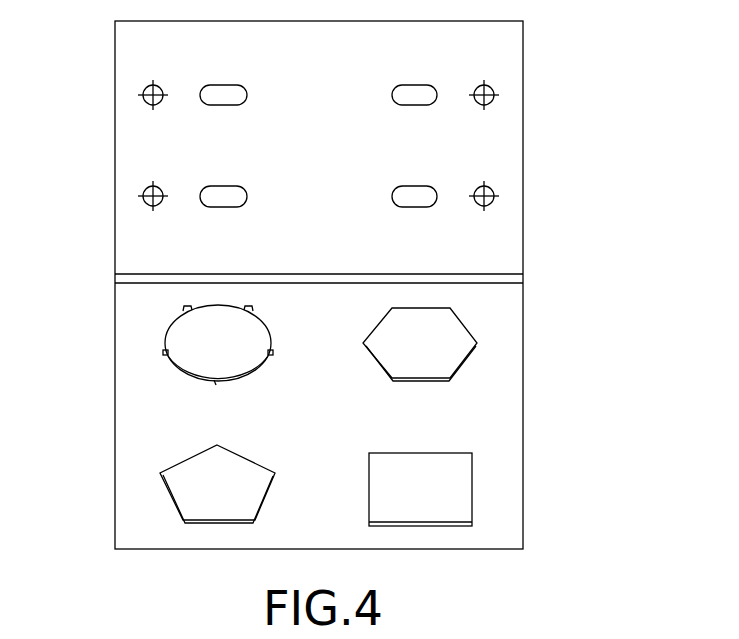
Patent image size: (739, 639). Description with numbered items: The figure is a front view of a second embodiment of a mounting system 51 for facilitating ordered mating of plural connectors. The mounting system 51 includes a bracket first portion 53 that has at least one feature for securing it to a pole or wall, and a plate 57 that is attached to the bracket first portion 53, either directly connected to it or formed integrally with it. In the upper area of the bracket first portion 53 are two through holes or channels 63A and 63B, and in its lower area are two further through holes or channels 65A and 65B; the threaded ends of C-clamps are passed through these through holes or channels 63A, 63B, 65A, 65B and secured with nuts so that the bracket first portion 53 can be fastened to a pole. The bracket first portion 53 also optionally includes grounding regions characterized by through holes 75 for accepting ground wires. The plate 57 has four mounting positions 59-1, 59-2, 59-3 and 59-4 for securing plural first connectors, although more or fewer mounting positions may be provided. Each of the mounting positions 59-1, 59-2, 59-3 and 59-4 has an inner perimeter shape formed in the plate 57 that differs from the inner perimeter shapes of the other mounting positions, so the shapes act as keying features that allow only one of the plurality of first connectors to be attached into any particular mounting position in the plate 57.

The mounting system 51 is at (625, 90).
The bracket first portion 53 is at (333, 151).
The plate 57 is at (333, 423).
The through holes 75 is at (494, 90).
The through hole or channel 63A is at (222, 86).
The through hole or channel 63B is at (413, 86).
The through hole or channel 65A is at (223, 207).
The through hole or channel 65B is at (413, 207).
The mounting position 59-1 is at (168, 325).
The mounting position 59-2 is at (466, 327).
The mounting position 59-3 is at (473, 487).
The mounting position 59-4 is at (166, 499).